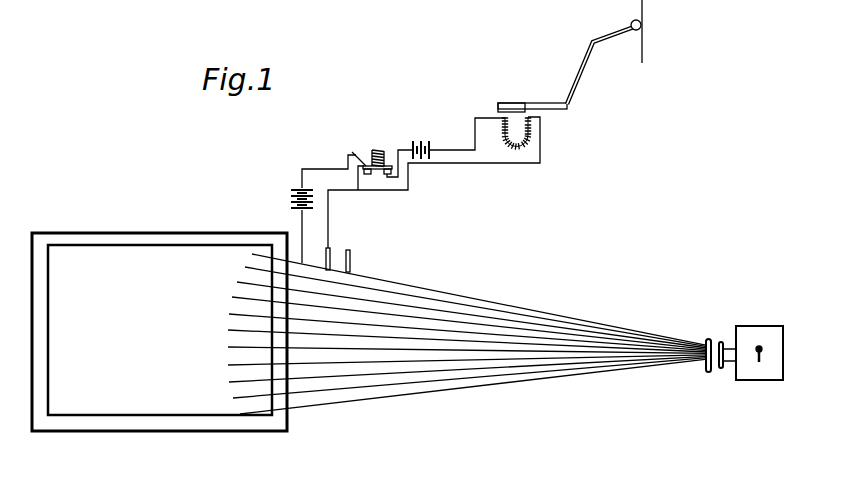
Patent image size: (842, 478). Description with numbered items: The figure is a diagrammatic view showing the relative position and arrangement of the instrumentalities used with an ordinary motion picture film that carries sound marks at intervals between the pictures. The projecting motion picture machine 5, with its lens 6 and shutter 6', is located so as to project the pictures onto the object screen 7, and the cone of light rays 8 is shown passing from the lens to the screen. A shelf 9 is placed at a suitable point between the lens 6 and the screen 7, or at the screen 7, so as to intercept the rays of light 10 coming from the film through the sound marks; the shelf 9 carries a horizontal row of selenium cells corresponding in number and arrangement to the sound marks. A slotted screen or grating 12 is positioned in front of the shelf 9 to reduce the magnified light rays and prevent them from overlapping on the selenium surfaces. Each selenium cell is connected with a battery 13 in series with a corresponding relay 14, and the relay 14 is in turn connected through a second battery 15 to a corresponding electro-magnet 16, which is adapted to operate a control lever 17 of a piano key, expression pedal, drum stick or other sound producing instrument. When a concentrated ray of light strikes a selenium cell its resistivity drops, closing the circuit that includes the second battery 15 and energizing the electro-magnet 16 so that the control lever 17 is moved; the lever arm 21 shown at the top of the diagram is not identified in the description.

The projecting motion picture machine 5 is at (772, 363).
The lens 6 is at (724, 375).
The shutter 6' is at (717, 337).
The object screen 7 is at (159, 332).
The cone of light rays 8 is at (425, 330).
The shelf 9 is at (331, 251).
The rays of light 10 is at (387, 272).
The slotted screen or grating 12 is at (351, 253).
The battery 13 is at (290, 192).
The relay 14 is at (360, 155).
The second battery 15 is at (417, 140).
The electro-magnet 16 is at (511, 143).
The control lever 17 is at (505, 102).
The lever 21 is at (616, 30).